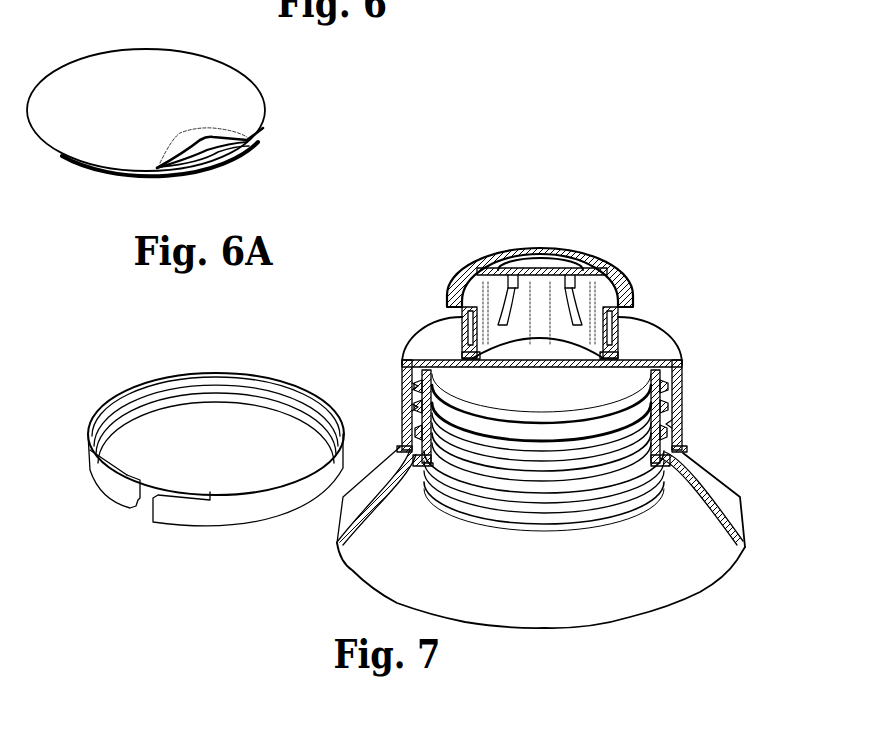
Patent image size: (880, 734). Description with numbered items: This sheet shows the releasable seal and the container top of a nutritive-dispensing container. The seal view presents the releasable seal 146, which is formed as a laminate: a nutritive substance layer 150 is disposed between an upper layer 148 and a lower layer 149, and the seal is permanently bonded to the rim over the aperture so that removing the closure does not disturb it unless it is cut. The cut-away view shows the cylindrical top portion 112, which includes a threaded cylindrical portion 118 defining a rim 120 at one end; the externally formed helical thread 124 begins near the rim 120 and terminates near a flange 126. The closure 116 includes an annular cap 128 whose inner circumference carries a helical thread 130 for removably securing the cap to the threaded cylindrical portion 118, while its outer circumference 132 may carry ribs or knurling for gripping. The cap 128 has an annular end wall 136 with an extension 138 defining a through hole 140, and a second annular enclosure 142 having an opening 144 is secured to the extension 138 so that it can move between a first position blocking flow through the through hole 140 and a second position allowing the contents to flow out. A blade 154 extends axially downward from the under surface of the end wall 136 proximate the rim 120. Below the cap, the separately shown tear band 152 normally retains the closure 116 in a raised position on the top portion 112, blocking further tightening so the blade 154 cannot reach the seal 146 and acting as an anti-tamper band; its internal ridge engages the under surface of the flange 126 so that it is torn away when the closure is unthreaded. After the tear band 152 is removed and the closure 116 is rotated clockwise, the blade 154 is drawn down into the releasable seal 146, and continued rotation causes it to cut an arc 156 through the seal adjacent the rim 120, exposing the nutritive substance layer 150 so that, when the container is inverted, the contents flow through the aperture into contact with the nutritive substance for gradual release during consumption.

In FIG. 7, the cylindrical top portion 112 is at (727, 510).
In FIG. 7, the closure 116 is at (278, 590).
In FIG. 7, the threaded cylindrical portion 118 is at (420, 423).
In FIG. 7, the rim 120 is at (430, 455).
In FIG. 7, the helical thread 124 is at (670, 421).
In FIG. 7, the flange 126 is at (418, 480).
In FIG. 7, the annular cap 128 is at (688, 352).
In FIG. 7, the helical thread 130 is at (672, 405).
In FIG. 7, the outer circumference 132 is at (402, 375).
In FIG. 7, the annular end wall 136 is at (437, 342).
In FIG. 7, the extension 138 is at (612, 320).
In FIG. 7, the through hole 140 is at (503, 300).
In FIG. 7, the second annular enclosure 142 is at (607, 285).
In FIG. 7, the opening 144 is at (566, 258).
In FIG. 6A, the releasable seal 146 is at (136, 62).
In FIG. 7, the releasable seal 146 is at (533, 355).
In FIG. 6A, the upper layer 148 is at (194, 140).
In FIG. 6A, the lower layer 149 is at (182, 167).
In FIG. 6A, the nutritive substance layer 150 is at (218, 150).
In FIG. 7, the tear band 152 is at (180, 385).
In FIG. 7, the blade 154 is at (445, 373).
In FIG. 7, the arc 156 is at (527, 408).